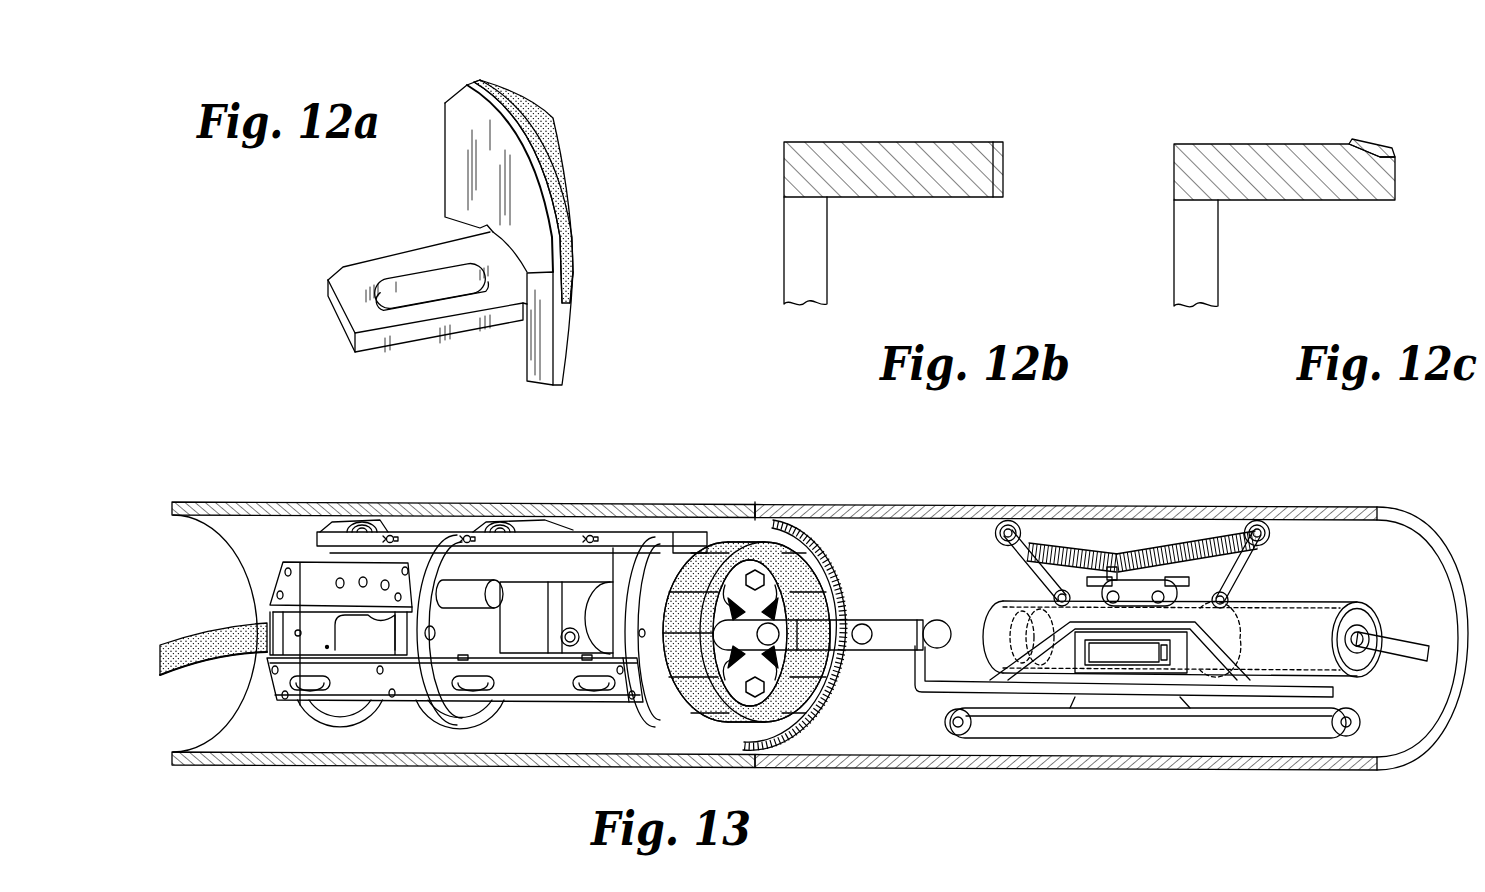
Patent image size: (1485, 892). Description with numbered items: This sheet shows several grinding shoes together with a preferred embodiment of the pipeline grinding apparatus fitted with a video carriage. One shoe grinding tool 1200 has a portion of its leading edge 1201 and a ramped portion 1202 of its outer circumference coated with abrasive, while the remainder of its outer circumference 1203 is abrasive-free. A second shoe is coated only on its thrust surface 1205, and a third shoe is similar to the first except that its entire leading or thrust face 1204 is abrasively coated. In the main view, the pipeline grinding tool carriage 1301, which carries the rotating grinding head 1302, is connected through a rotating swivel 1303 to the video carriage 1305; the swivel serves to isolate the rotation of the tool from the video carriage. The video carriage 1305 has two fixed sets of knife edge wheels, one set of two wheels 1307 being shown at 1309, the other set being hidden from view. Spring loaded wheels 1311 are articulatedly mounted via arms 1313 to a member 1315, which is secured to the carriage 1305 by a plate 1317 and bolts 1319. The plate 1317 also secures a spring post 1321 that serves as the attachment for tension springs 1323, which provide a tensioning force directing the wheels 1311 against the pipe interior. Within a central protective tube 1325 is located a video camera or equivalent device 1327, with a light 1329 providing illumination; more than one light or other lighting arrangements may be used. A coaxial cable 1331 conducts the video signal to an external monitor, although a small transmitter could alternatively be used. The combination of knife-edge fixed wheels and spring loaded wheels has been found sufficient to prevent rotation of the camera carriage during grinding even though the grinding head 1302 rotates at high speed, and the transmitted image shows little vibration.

In FIG. 12A, the shoe grinding tool 1200 is at (477, 327).
In FIG. 12A, the leading edge 1201 is at (537, 147).
In FIG. 12A, the ramped portion 1202 is at (570, 270).
In FIG. 12A, the outer circumference 1203 is at (565, 310).
In FIG. 12C, the thrust face 1204 is at (1395, 164).
In FIG. 12B, the thrust surface 1205 is at (1003, 158).
In FIG. 13, the pipeline grinding tool carriage 1301 is at (523, 685).
In FIG. 13, the grinding head 1302 is at (738, 547).
In FIG. 13, the rotating swivel 1303 is at (887, 632).
In FIG. 13, the video carriage 1305 is at (922, 700).
In FIG. 13, the knife edge wheels 1307 is at (962, 735).
In FIG. 13, the fixed set of wheels 1309 is at (1215, 722).
In FIG. 13, the spring loaded wheels 1311 is at (1036, 562).
In FIG. 13, the arms 1313 is at (1005, 562).
In FIG. 13, the member 1315 is at (1320, 620).
In FIG. 13, the plate 1317 is at (1141, 588).
In FIG. 13, the bolts 1319 is at (1178, 590).
In FIG. 13, the spring post 1321 is at (1113, 557).
In FIG. 13, the tension springs 1323 is at (1068, 577).
In FIG. 13, the central protective tube 1325 is at (1355, 602).
In FIG. 13, the video camera 1327 is at (1073, 657).
In FIG. 13, the light 1329 is at (1137, 653).
In FIG. 13, the coaxial cable 1331 is at (1397, 637).